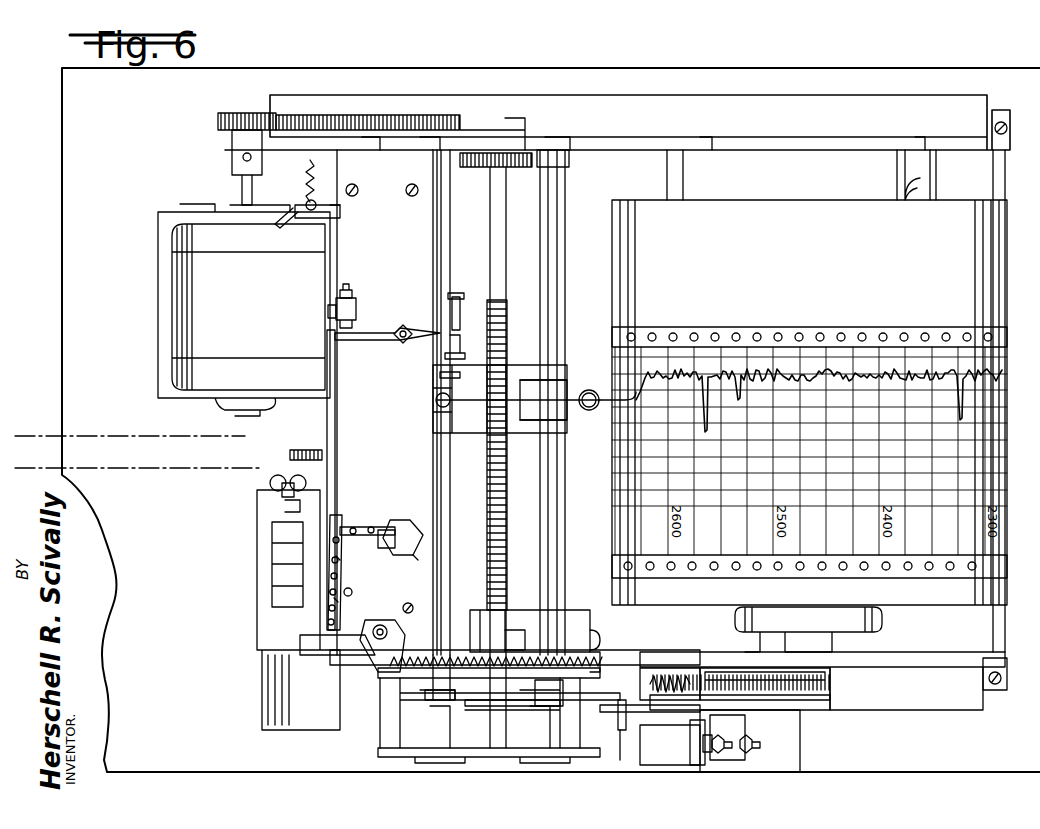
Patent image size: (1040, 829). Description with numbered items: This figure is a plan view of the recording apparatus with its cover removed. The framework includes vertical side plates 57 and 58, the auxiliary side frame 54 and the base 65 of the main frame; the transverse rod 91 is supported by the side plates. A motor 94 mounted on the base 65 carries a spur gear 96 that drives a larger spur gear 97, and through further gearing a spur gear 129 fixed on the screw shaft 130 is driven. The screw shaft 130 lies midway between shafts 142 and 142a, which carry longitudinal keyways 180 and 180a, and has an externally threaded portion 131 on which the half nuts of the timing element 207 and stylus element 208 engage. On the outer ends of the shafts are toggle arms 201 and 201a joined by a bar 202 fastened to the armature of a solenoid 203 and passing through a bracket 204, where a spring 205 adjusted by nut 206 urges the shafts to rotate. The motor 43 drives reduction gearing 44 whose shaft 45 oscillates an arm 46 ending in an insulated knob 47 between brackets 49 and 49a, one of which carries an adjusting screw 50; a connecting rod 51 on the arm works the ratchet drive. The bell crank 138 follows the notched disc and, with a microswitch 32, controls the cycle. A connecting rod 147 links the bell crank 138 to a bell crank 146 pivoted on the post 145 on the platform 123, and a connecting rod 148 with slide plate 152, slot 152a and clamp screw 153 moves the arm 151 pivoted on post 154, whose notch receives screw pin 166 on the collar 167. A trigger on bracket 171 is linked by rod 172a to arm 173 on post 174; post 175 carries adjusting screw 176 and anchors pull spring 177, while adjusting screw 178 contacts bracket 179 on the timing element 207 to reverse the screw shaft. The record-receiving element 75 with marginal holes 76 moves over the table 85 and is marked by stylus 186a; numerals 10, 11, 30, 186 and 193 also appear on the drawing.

The section line 10 is at (15, 436).
The section line 11 is at (15, 468).
The roller 30 is at (590, 630).
The microswitch 32 is at (565, 612).
The motor 43 is at (846, 632).
The reduction gearing 44 is at (770, 692).
The shaft 45 is at (706, 752).
The arm 46 is at (695, 765).
The knob 47 is at (730, 753).
The bracket 49 is at (740, 760).
The bracket 49a is at (660, 760).
The adjusting screw 50 is at (760, 744).
The connecting rod 51 is at (622, 725).
The auxiliary side frame 54 is at (482, 757).
The vertical side plate 57 is at (805, 150).
The vertical side plate 58 is at (868, 667).
The base 65 is at (284, 772).
The record-receiving element 75 is at (916, 327).
The marginal holes 76 is at (826, 588).
The table 85 is at (858, 200).
The transverse rod 91 is at (1005, 640).
The motor 94 is at (172, 303).
The spur gear 96 is at (218, 120).
The spur gear 97 is at (368, 116).
The platform 123 is at (441, 485).
The spur gear 129 is at (486, 168).
The screw shaft 130 is at (500, 206).
The threaded portion 131 is at (512, 318).
The bell crank 138 is at (590, 650).
The shaft 142 is at (556, 181).
The shaft 142a is at (442, 211).
The post 145 is at (392, 620).
The bell crank 146 is at (400, 640).
The connecting rod 147 is at (470, 656).
The connecting rod 148 is at (340, 613).
The arm 151 is at (366, 545).
The slide plate 152 is at (350, 590).
The elongated slot 152a is at (340, 603).
The clamp screw 153 is at (340, 577).
The post 154 is at (354, 528).
The screw pin 166 is at (387, 520).
The collar 167 is at (398, 557).
The bracket 171 is at (332, 480).
The rod 172a is at (335, 395).
The arm 173 is at (372, 340).
The post 174 is at (396, 327).
The post 175 is at (356, 312).
The adjusting screw 176 is at (348, 288).
The pull spring 177 is at (330, 318).
The adjusting screw 178 is at (456, 297).
The bracket 179 is at (460, 356).
The keyway 180 is at (552, 216).
The keyway 180a is at (446, 240).
The pen holder 186 is at (575, 392).
The stylus 186a is at (628, 425).
The counter 193 is at (257, 572).
The toggle arm 201 is at (530, 702).
The toggle arm 201a is at (462, 700).
The bar 202 is at (478, 700).
The solenoid 203 is at (305, 722).
The bracket 204 is at (620, 760).
The spring 205 is at (655, 668).
The nut 206 is at (688, 668).
The timing element 207 is at (562, 370).
The stylus element 208 is at (445, 424).